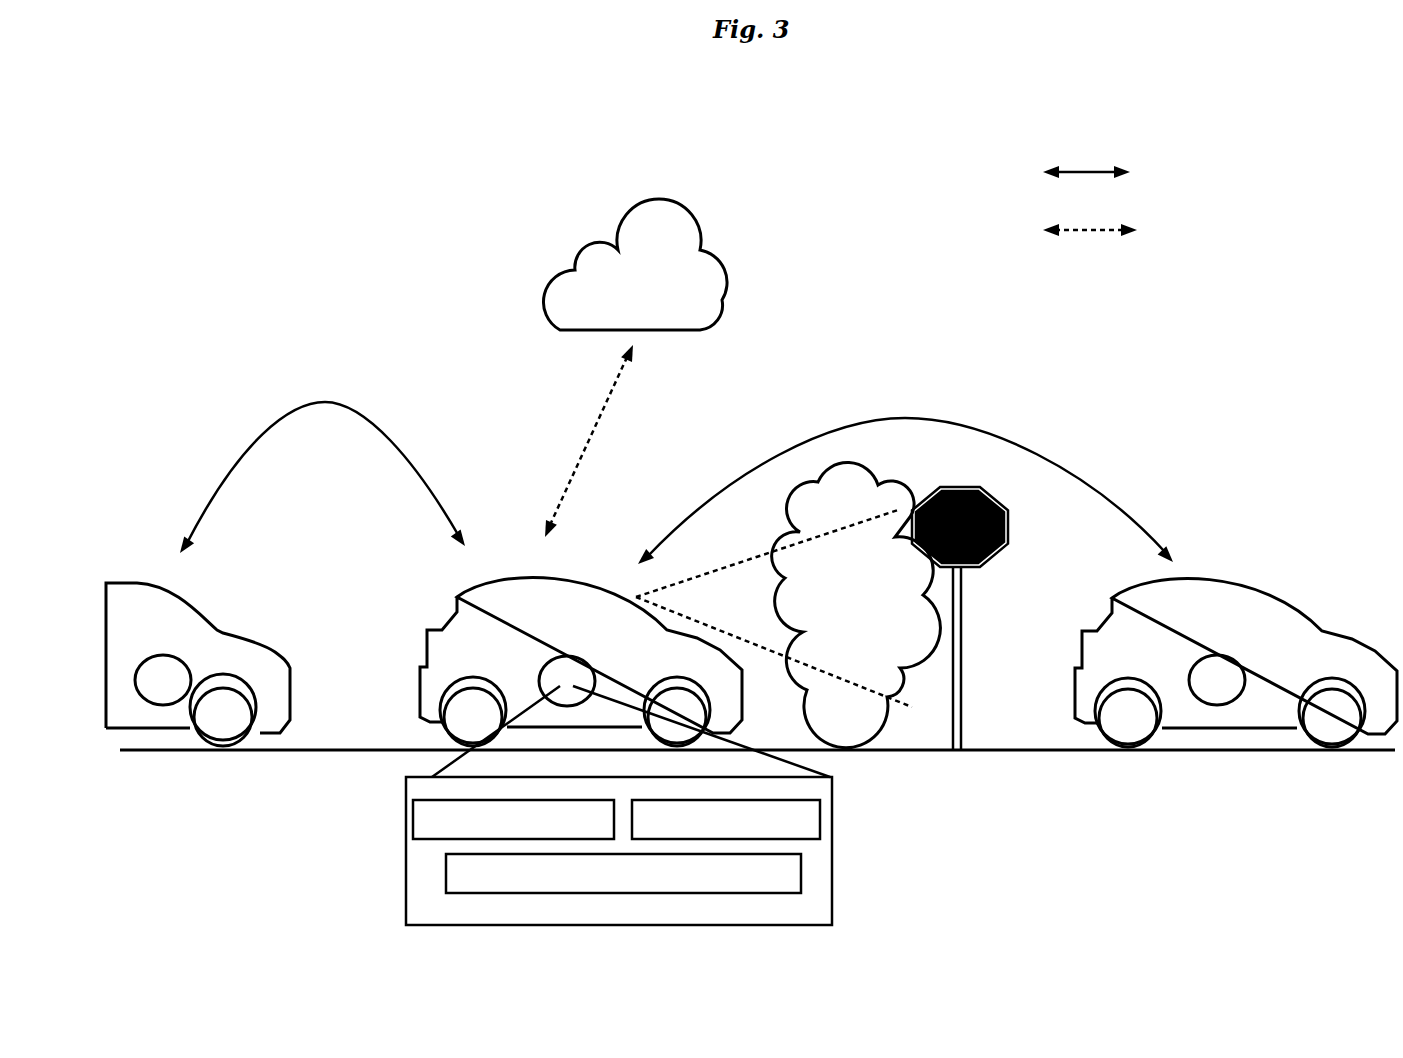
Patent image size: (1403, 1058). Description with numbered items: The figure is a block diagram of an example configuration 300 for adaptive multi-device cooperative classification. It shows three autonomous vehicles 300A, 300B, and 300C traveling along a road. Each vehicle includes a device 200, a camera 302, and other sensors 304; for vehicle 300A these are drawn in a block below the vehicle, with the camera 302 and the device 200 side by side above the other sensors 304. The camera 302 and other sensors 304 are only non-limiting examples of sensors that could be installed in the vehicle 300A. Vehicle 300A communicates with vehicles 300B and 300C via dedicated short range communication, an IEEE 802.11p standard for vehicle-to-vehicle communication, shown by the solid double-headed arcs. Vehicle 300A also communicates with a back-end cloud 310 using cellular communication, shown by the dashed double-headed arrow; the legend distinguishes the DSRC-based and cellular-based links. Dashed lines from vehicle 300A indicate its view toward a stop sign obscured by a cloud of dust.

The example configuration for adaptive multi-device cooperative classification 300 is at (167, 128).
The autonomous vehicle 300A is at (619, 751).
The autonomous vehicle 300B is at (1332, 630).
The autonomous vehicle 300C is at (130, 598).
The back-end cloud 310 is at (635, 264).
The camera 302 is at (513, 819).
The device 200 is at (726, 819).
The other sensors 304 is at (623, 873).